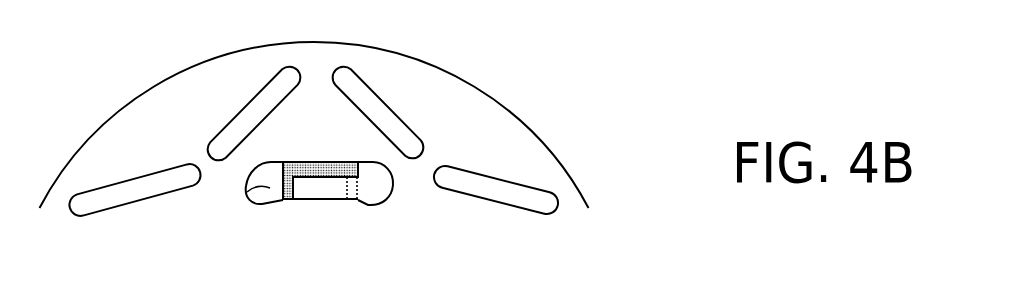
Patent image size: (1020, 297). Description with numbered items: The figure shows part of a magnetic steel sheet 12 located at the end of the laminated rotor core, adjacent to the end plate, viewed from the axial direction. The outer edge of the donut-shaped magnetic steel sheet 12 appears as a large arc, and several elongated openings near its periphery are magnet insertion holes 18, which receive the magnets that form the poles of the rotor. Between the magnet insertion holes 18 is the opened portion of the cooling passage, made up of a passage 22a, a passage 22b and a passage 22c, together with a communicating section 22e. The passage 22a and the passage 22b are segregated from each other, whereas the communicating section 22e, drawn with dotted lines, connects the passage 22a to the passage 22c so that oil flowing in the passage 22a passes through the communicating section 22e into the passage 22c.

The magnetic steel sheet 12 is at (474, 112).
The magnet insertion hole 18 is at (528, 182).
The passage 22a is at (308, 188).
The passage 22b is at (248, 189).
The passage 22c is at (378, 190).
The communicating section 22e is at (352, 190).